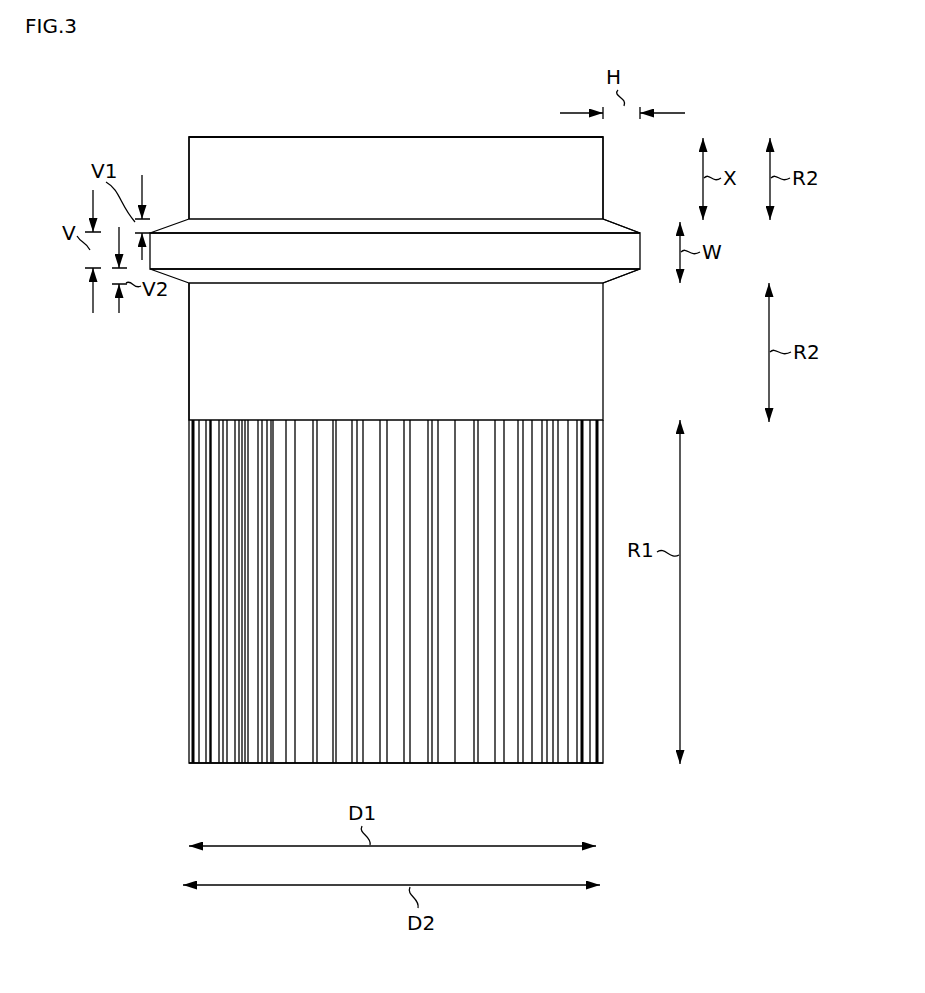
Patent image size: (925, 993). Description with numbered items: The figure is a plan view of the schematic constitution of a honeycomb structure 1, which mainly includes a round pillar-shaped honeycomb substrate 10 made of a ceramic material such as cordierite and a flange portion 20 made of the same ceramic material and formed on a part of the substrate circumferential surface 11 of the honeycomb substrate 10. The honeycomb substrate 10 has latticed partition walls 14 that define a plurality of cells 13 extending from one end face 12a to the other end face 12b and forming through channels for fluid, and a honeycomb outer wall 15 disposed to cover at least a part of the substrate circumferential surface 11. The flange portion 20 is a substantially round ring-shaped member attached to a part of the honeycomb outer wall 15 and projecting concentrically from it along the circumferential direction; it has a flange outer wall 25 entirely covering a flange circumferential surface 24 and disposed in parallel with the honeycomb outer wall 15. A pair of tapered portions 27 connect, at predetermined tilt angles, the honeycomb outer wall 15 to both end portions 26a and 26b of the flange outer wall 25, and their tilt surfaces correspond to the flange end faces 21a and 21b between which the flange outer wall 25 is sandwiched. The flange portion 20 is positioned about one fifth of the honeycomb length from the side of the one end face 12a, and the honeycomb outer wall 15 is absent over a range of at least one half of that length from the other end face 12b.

The honeycomb structure 1 is at (183, 112).
The honeycomb substrate 10 is at (212, 154).
The substrate circumferential surface 11 is at (358, 591).
The one end face 12a is at (357, 137).
The other end face 12b is at (443, 765).
The cells 13 is at (358, 591).
The partition walls 14 is at (498, 528).
The honeycomb outer wall 15 is at (206, 382).
The flange portion 20 is at (388, 268).
The one flange end face 21a is at (230, 228).
The other flange end face 21b is at (408, 278).
The flange circumferential surface 24 is at (428, 247).
The flange outer wall 25 is at (395, 222).
The end portion of flange outer wall 26a is at (608, 224).
The end portion of flange outer wall 26b is at (545, 272).
The tapered portions 27 is at (395, 257).